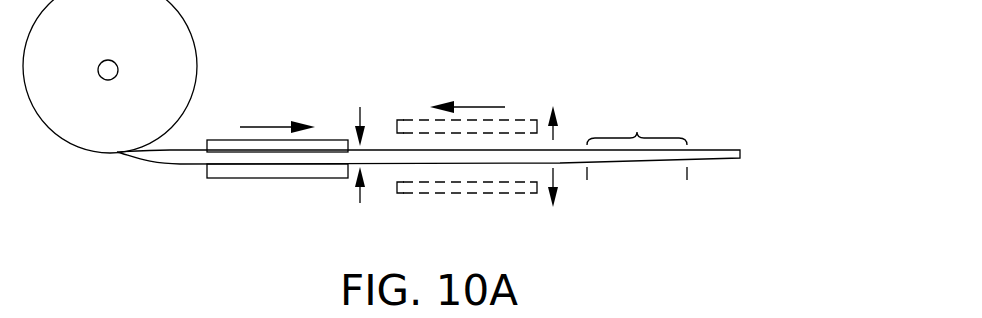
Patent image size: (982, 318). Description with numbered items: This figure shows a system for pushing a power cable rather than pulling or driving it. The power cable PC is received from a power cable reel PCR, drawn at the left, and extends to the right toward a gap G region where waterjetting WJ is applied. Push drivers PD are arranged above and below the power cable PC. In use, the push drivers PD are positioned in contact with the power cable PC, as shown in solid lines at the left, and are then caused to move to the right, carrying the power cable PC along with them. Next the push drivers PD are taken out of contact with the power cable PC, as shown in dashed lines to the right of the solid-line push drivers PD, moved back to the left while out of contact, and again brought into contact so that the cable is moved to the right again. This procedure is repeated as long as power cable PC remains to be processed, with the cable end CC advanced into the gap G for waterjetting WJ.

The power cable reel PCR is at (136, 37).
The push drivers PD is at (228, 130).
The power cable PC is at (386, 134).
The gap G is at (637, 137).
The connecting cable / carrier CC is at (727, 143).
The waterjetting WJ is at (652, 194).